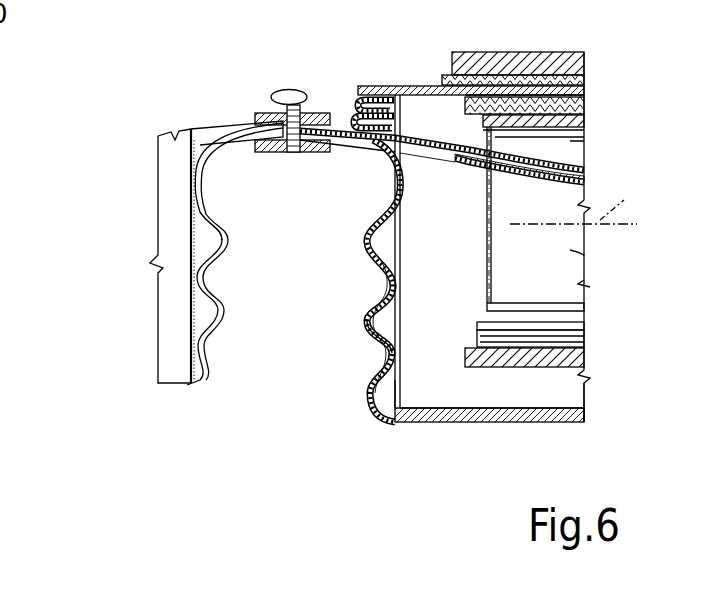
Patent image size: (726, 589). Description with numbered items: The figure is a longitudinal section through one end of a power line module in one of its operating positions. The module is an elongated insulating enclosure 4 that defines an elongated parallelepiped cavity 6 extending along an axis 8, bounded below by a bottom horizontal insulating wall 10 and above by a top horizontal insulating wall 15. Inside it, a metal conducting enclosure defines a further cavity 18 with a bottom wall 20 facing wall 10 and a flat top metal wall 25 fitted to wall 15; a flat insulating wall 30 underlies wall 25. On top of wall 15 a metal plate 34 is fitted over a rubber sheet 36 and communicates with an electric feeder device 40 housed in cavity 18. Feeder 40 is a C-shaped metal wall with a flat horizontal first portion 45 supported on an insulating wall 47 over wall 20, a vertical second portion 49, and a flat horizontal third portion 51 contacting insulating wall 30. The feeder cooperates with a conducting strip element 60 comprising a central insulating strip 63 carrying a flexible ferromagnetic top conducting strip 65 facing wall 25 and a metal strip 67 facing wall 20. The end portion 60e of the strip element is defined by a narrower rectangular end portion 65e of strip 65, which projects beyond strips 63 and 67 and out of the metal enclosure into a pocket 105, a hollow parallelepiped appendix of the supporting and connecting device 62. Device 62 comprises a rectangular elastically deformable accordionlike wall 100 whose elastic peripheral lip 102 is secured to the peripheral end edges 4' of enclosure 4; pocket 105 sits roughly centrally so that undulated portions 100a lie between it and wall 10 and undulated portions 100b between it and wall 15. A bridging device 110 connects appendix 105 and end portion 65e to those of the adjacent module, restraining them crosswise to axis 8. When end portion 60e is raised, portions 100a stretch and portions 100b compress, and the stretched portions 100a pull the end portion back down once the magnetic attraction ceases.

The elongated insulating enclosure 4 is at (165, 220).
The peripheral end edges 4' is at (411, 280).
The elongated parallelepiped cavity 6 is at (445, 385).
The axis 8 is at (575, 201).
The bottom horizontal insulating wall 10 is at (584, 418).
The top horizontal insulating wall 15 is at (580, 92).
The elongated parallelepiped cavity 18 is at (501, 215).
The bottom wall 20 is at (584, 358).
The flat top metal wall 25 is at (584, 102).
The flat insulating wall 30 is at (582, 121).
The metal plate 34 is at (505, 68).
The rubber sheet 36 is at (452, 66).
The electric feeder device 40 is at (480, 286).
The flat horizontal first portion 45 is at (522, 318).
The insulating wall 47 is at (584, 333).
The vertical second portion 49 is at (584, 259).
The flat horizontal third portion 51 is at (584, 140).
The conducting strip element 60 is at (560, 288).
The end portion 60e is at (354, 165).
The supporting and connecting device 62 is at (225, 366).
The central insulating strip 63 is at (470, 168).
The flexible top conducting strip 65 is at (452, 165).
The rectangular end portion 65e is at (360, 103).
The metal strip 67 is at (488, 172).
The accordionlike wall 100 is at (345, 300).
The undulated portions 100a is at (360, 336).
The undulated portions 100b is at (378, 95).
The elastic peripheral lip 102 is at (437, 84).
The pocket 105 is at (256, 152).
The bridging device 110 is at (286, 90).